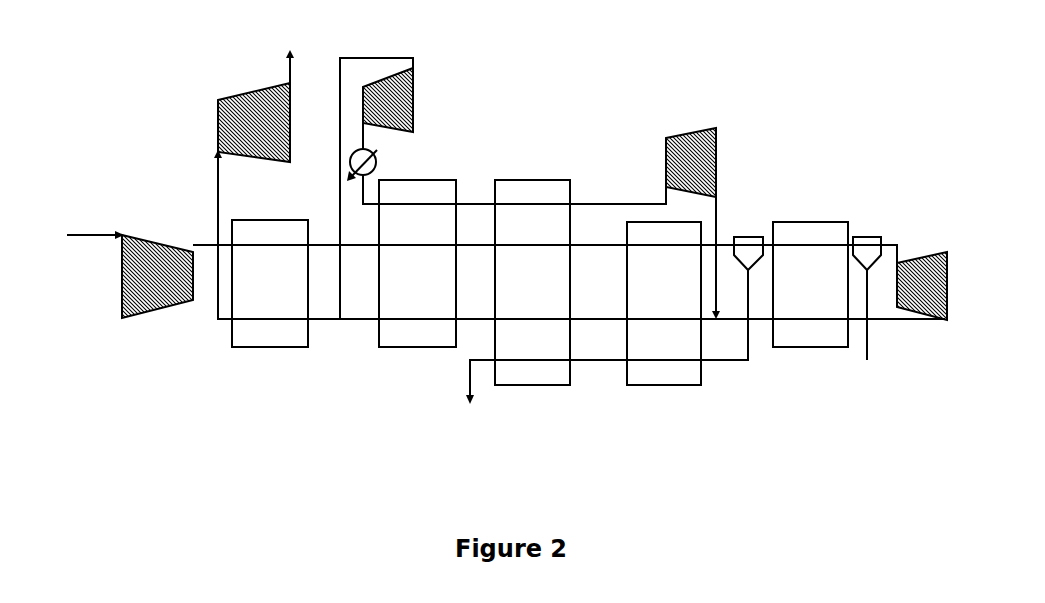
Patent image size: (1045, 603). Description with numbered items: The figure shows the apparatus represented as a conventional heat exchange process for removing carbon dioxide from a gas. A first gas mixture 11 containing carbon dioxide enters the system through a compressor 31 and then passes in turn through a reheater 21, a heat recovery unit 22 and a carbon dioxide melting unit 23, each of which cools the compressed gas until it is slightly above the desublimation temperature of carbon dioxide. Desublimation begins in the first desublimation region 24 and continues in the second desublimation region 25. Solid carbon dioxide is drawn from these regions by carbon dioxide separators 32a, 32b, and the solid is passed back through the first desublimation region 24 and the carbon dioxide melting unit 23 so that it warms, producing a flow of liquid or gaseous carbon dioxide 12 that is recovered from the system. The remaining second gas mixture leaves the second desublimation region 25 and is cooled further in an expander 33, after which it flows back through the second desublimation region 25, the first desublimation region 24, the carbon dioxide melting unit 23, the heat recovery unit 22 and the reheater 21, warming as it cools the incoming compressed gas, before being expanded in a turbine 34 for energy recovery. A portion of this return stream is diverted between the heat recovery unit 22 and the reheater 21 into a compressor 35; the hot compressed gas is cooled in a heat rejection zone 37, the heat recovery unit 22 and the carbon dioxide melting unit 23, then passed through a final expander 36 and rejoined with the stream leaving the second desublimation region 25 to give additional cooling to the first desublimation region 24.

The first gas mixture 11 is at (75, 238).
The liquid or gaseous carbon dioxide 12 is at (469, 396).
The reheater 21 is at (270, 283).
The heat recovery unit 22 is at (417, 263).
The carbon dioxide melting unit 23 is at (532, 282).
The first desublimation region 24 is at (664, 303).
The second desublimation region 25 is at (810, 284).
The compressor 31 is at (157, 276).
The carbon dioxide separator 32a is at (748, 240).
The carbon dioxide separator 32b is at (867, 240).
The expander 33 is at (922, 286).
The turbine 34 is at (254, 122).
The compressor 35 is at (388, 100).
The final expander 36 is at (691, 162).
The heat rejection zone 37 is at (374, 165).